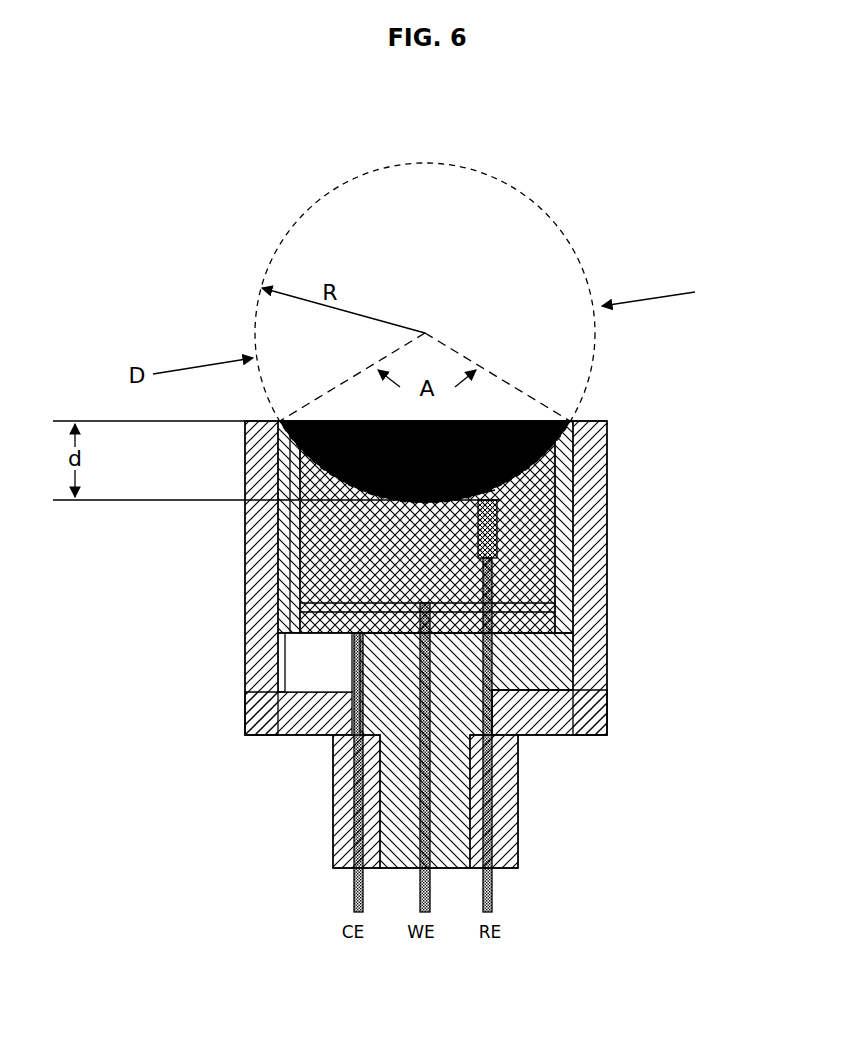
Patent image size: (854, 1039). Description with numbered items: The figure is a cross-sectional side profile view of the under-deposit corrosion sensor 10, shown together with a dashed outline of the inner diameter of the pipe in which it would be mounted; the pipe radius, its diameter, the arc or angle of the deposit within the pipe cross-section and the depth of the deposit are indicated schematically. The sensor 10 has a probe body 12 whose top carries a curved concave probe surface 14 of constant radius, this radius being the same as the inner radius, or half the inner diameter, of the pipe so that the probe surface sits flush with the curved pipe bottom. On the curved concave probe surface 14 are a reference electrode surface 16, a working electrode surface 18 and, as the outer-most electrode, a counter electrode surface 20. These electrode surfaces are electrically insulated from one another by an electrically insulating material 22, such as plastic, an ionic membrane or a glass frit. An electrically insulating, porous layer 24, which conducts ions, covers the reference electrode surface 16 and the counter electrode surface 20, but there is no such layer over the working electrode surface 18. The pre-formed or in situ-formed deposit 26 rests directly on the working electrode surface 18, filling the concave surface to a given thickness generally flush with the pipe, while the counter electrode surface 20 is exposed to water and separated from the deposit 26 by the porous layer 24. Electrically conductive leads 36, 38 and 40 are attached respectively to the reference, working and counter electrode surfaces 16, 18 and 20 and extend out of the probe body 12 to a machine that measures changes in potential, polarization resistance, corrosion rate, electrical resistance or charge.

The under-deposit corrosion sensor 10 is at (152, 607).
The probe body 12 is at (608, 703).
The curved concave probe surface 14 is at (405, 515).
The reference electrode surface 16 is at (494, 512).
The working electrode surface 18 is at (406, 503).
The counter electrode surface 20 is at (290, 453).
The electrically insulating material 22 is at (458, 973).
The electrically insulating porous layer 24 is at (292, 440).
The deposit 26 is at (416, 421).
The electrically conductive lead 36 is at (493, 890).
The electrically conductive lead 38 is at (422, 885).
The electrically conductive lead 40 is at (353, 889).